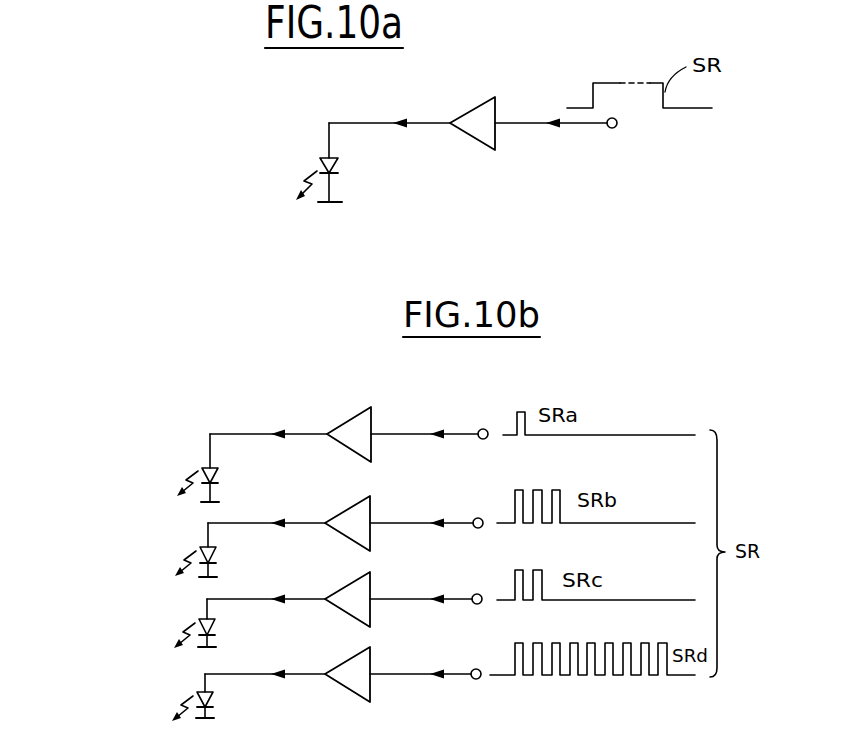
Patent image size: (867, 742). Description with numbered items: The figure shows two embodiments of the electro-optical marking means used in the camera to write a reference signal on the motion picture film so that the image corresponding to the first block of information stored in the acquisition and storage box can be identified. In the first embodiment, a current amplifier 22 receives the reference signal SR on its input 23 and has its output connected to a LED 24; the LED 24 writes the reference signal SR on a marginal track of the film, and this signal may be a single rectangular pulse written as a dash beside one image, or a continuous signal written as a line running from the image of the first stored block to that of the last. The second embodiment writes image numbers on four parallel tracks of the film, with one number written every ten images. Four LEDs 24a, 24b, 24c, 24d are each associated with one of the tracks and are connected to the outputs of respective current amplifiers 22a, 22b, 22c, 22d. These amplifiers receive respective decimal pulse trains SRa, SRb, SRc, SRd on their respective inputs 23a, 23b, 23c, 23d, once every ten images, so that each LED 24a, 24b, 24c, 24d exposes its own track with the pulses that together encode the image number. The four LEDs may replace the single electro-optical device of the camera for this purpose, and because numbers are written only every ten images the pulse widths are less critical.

In FIG. 10A, the current amplifier 22 is at (477, 107).
In FIG. 10A, the input 23 is at (612, 128).
In FIG. 10A, the LED 24 is at (338, 163).
In FIG. 10B, the current amplifier 22a is at (342, 427).
In FIG. 10B, the current amplifier 22b is at (343, 513).
In FIG. 10B, the current amplifier 22c is at (343, 592).
In FIG. 10B, the current amplifier 22d is at (343, 668).
In FIG. 10B, the input 23a is at (483, 429).
In FIG. 10B, the input 23b is at (478, 518).
In FIG. 10B, the input 23c is at (477, 594).
In FIG. 10B, the input 23d is at (476, 669).
In FIG. 10B, the LED 24a is at (218, 470).
In FIG. 10B, the LED 24b is at (216, 555).
In FIG. 10B, the LED 24c is at (215, 627).
In FIG. 10B, the LED 24d is at (213, 697).